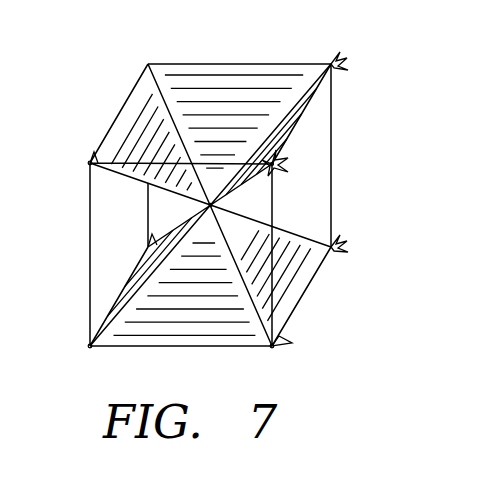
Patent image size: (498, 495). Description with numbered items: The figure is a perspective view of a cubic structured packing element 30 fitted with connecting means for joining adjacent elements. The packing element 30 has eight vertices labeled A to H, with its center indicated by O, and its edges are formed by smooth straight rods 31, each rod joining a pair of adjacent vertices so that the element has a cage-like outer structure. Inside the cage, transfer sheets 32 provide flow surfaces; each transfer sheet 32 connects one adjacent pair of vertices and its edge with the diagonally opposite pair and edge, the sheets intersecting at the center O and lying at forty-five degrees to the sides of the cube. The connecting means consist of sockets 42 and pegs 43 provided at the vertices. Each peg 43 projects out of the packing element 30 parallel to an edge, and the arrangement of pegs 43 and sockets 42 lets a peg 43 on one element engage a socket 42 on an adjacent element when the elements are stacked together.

The structured packing element 30 is at (229, 191).
The rods 31 is at (120, 110).
The transfer sheets 32 is at (219, 78).
The socket 42 is at (272, 168).
The peg 43 is at (325, 62).